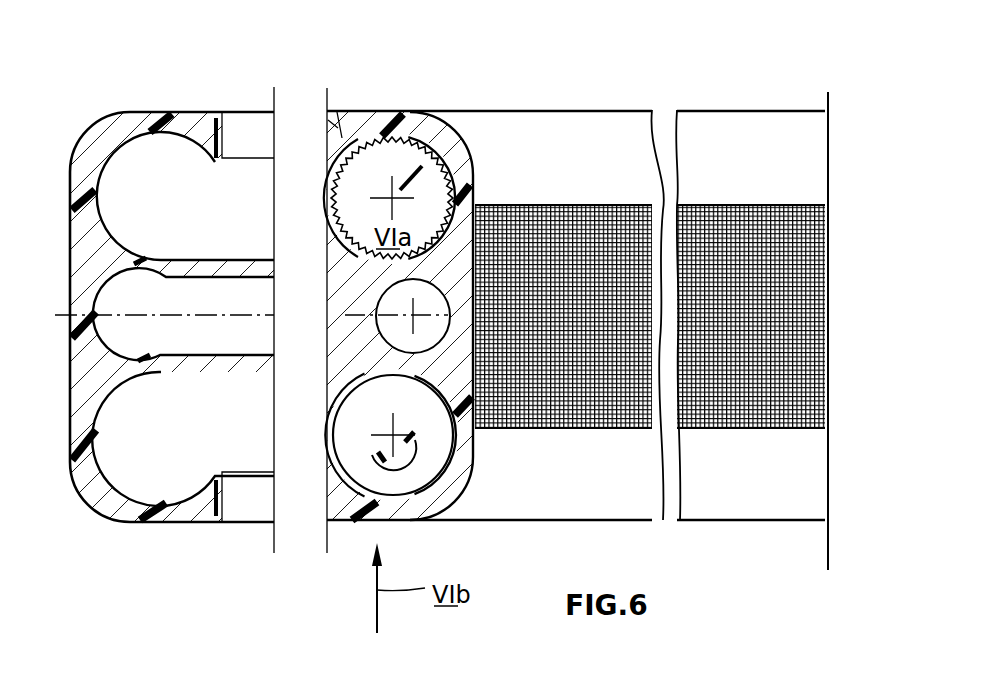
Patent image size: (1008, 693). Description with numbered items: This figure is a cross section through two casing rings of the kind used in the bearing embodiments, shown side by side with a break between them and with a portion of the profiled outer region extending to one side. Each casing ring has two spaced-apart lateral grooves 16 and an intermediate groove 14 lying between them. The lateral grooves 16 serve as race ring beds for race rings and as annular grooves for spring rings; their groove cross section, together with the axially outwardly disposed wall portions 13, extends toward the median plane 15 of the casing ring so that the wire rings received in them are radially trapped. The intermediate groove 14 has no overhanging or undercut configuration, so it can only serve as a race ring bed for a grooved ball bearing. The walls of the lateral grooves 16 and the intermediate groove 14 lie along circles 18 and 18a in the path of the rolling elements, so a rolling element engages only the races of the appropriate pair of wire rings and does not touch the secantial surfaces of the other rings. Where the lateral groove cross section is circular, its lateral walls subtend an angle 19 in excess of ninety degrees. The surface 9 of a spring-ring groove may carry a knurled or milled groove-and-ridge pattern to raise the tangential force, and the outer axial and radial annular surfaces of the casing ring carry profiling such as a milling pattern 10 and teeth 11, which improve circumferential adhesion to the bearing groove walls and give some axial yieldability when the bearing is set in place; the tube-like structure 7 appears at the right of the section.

The tube 7 is at (828, 478).
The surface 9 is at (347, 181).
The milling pattern 10 is at (720, 237).
The teeth 11 is at (185, 112).
The axially outwardly disposed wall portions 13 is at (220, 114).
The intermediate groove 14 is at (115, 335).
The median plane 15 is at (216, 314).
The lateral grooves 16 is at (73, 203).
The circle 18 is at (332, 246).
The circle 18a is at (366, 316).
The angle 19 is at (405, 463).